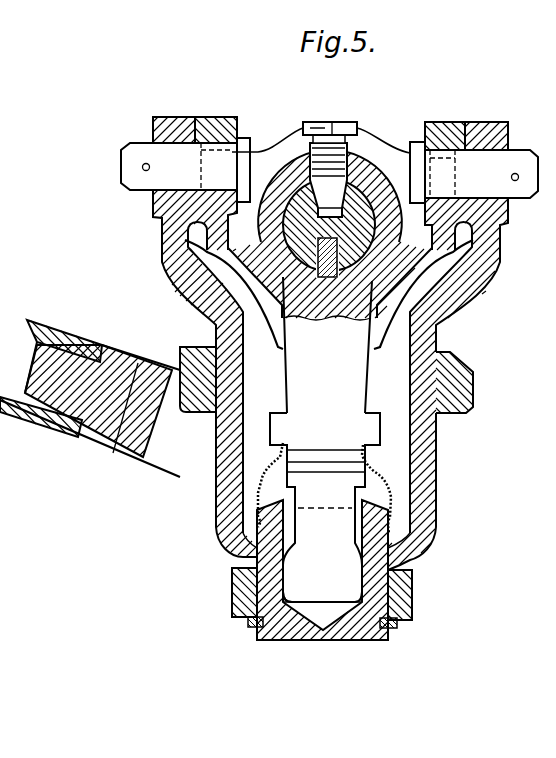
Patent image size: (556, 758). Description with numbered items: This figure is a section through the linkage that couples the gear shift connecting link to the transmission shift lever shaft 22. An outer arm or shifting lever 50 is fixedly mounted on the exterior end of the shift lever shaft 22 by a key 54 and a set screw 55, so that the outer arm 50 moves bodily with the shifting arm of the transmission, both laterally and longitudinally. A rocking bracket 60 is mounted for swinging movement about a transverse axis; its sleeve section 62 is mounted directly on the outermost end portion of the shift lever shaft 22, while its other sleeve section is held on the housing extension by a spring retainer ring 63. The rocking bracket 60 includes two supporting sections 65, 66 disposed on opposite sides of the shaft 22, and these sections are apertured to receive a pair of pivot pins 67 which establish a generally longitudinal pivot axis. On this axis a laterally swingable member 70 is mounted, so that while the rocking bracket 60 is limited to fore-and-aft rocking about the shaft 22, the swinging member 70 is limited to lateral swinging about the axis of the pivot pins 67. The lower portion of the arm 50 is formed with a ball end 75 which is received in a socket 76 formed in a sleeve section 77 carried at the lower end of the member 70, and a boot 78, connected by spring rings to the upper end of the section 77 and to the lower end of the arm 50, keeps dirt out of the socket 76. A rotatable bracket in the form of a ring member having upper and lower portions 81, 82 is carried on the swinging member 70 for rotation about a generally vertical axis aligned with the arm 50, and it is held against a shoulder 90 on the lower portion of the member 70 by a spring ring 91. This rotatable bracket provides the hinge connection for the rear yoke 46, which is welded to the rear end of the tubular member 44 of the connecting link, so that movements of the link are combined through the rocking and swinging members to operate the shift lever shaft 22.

The shift lever shaft 22 is at (311, 150).
The tubular member 44 is at (45, 333).
The rear yoke 46 is at (103, 444).
The outer arm 50 is at (348, 365).
The key 54 is at (327, 279).
The set screw 55 is at (341, 124).
The rocking bracket 60 is at (205, 256).
The sleeve section 62 is at (367, 170).
The spring retainer ring 63 is at (275, 147).
The supporting section 65 is at (218, 122).
The supporting section 66 is at (442, 122).
The pivot pins 67 is at (137, 148).
The laterally swingable member 70 is at (192, 303).
The ball end 75 is at (336, 594).
The socket 76 is at (360, 542).
The sleeve section 77 is at (370, 642).
The boot 78 is at (392, 498).
The upper portion 81 is at (467, 383).
The lower portion 82 is at (401, 598).
The shoulder 90 is at (257, 568).
The spring ring 91 is at (253, 627).